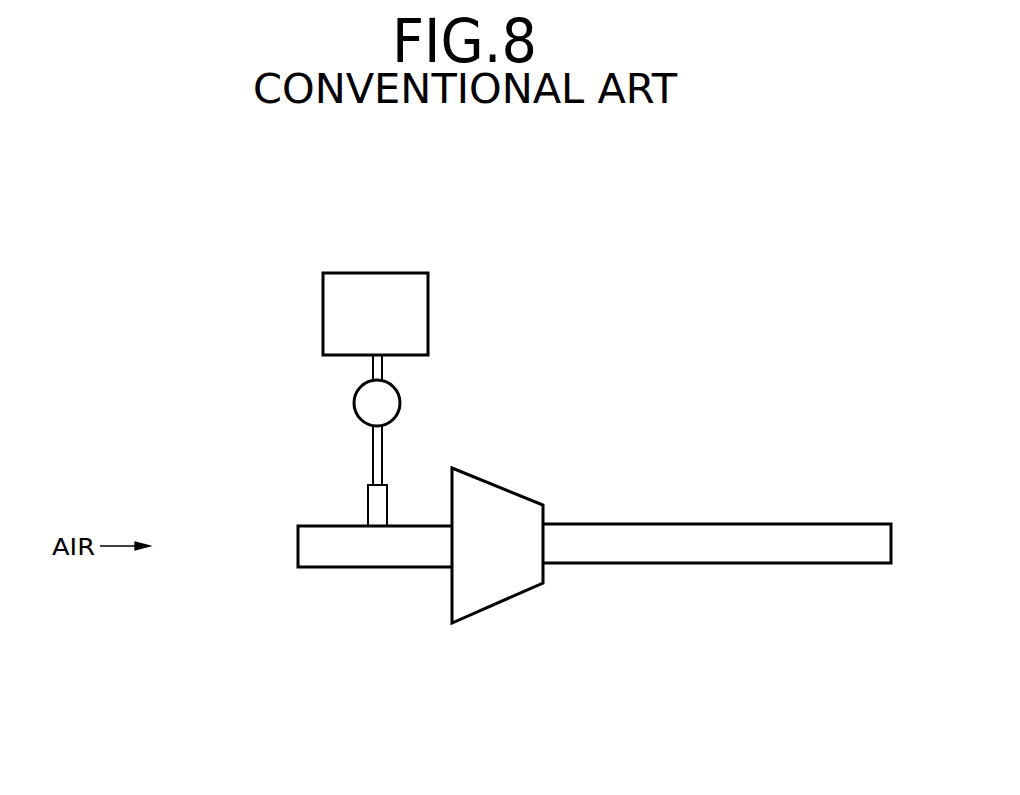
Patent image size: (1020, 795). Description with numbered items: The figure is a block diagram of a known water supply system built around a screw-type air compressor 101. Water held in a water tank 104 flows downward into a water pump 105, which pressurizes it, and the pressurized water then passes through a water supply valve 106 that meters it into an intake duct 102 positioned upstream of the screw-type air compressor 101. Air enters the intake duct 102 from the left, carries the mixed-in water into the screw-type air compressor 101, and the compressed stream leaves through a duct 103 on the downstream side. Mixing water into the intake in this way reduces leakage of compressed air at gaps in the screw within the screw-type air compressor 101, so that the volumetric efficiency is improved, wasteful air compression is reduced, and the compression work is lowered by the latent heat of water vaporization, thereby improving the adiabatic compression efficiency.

The screw-type air compressor 101 is at (530, 505).
The intake duct 102 is at (375, 568).
The duct 103 is at (813, 564).
The water tank 104 is at (343, 273).
The water pump 105 is at (354, 403).
The water supply valve 106 is at (368, 503).